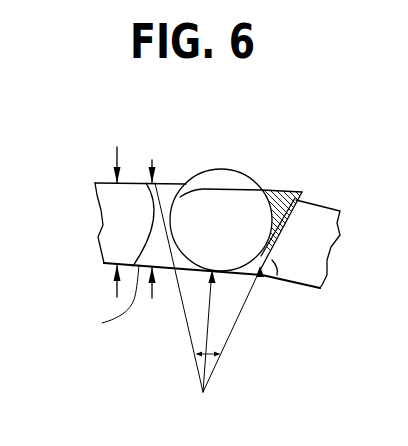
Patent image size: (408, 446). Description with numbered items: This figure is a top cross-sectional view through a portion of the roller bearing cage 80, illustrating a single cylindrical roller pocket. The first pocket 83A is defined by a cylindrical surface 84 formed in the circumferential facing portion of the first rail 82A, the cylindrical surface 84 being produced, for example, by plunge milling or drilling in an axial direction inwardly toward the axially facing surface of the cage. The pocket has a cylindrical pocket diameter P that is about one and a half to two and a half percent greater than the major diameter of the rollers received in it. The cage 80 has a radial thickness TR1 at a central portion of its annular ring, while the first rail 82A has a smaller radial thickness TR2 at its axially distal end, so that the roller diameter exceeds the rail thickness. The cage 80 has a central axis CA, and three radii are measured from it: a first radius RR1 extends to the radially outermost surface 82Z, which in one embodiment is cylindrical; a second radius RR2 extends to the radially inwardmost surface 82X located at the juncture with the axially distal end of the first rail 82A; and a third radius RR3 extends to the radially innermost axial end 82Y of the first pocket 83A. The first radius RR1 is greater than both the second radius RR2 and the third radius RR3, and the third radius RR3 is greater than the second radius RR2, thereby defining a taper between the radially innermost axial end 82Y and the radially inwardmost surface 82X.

The cage 80 is at (272, 116).
The first rail 82A is at (162, 198).
The radially inwardmost surface 82X is at (265, 274).
The radially innermost axial end 82Y is at (100, 265).
The radially outermost surface 82Z is at (300, 193).
The first pocket 83A is at (202, 190).
The cylindrical surface 84 is at (260, 246).
The cylindrical pocket diameter P is at (248, 168).
The radial thickness TR1 is at (113, 158).
The radial thickness TR2 is at (153, 160).
The first radius RR1 is at (98, 301).
The second radius RR2 is at (246, 299).
The third radius RR3 is at (229, 338).
The central axis CA is at (201, 346).